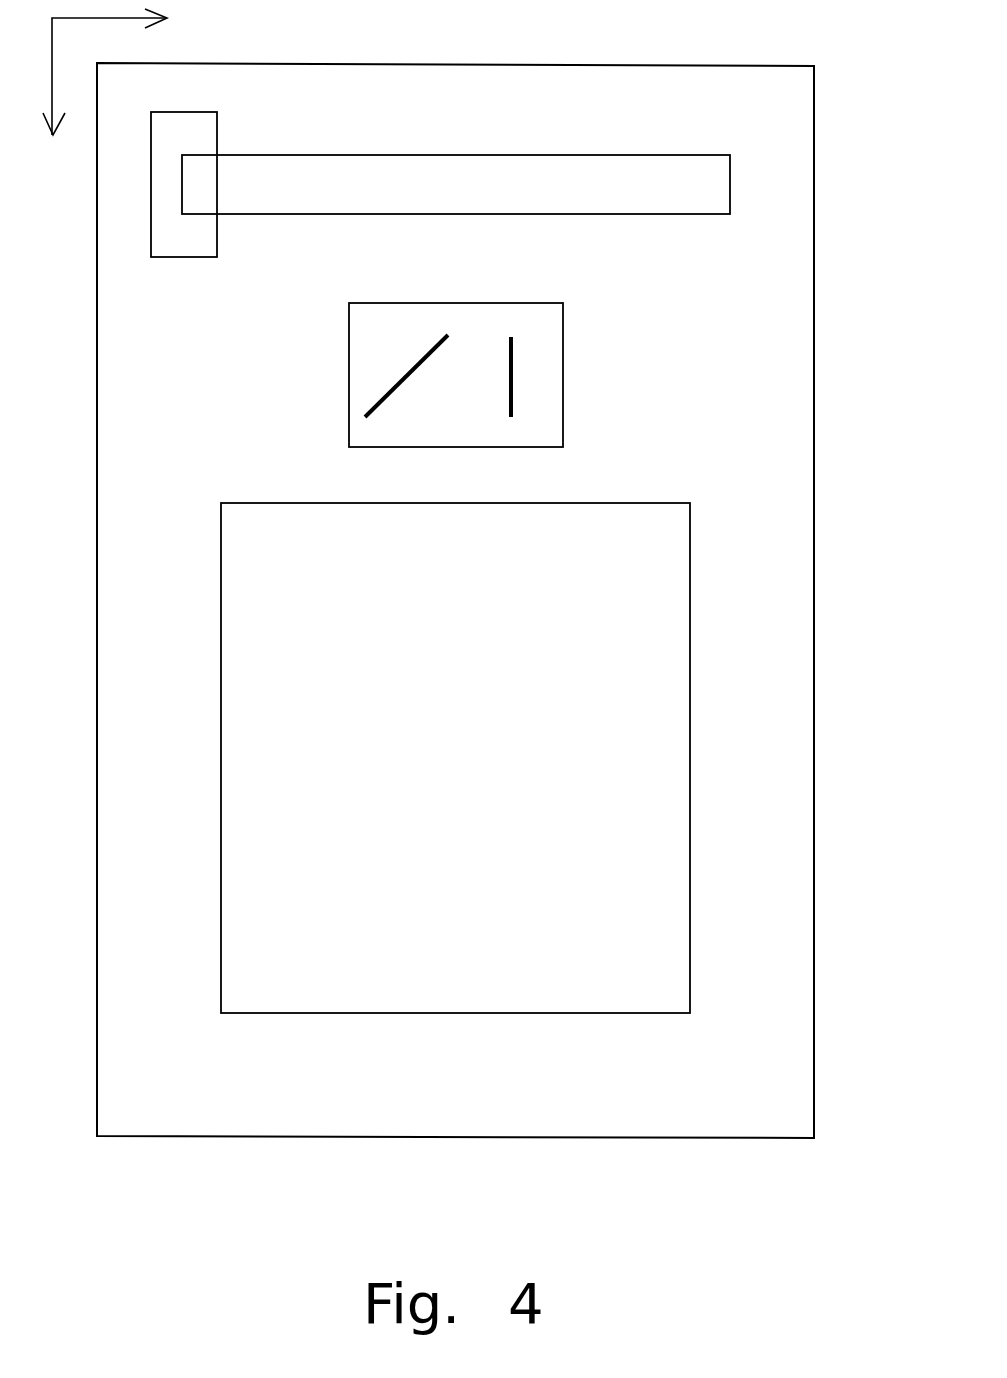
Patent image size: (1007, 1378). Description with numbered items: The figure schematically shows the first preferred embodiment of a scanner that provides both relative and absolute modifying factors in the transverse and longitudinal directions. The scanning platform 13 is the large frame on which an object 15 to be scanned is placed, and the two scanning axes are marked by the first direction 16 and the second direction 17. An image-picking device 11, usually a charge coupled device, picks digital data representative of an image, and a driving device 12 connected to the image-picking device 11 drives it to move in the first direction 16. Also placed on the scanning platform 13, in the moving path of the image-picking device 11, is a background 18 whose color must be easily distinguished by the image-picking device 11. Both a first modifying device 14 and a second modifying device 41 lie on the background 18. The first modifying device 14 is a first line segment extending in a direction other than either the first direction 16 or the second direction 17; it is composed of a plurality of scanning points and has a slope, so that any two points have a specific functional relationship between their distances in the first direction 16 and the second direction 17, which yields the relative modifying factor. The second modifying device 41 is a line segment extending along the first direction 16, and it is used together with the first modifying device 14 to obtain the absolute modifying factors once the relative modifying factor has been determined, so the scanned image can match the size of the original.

The image-picking device 11 is at (703, 187).
The driving device 12 is at (170, 183).
The scanning platform 13 is at (772, 483).
The first modifying device 14 is at (412, 368).
The object 15 is at (645, 647).
The first direction 16 is at (57, 148).
The second direction 17 is at (130, 67).
The background 18 is at (532, 336).
The second modifying device 41 is at (513, 387).